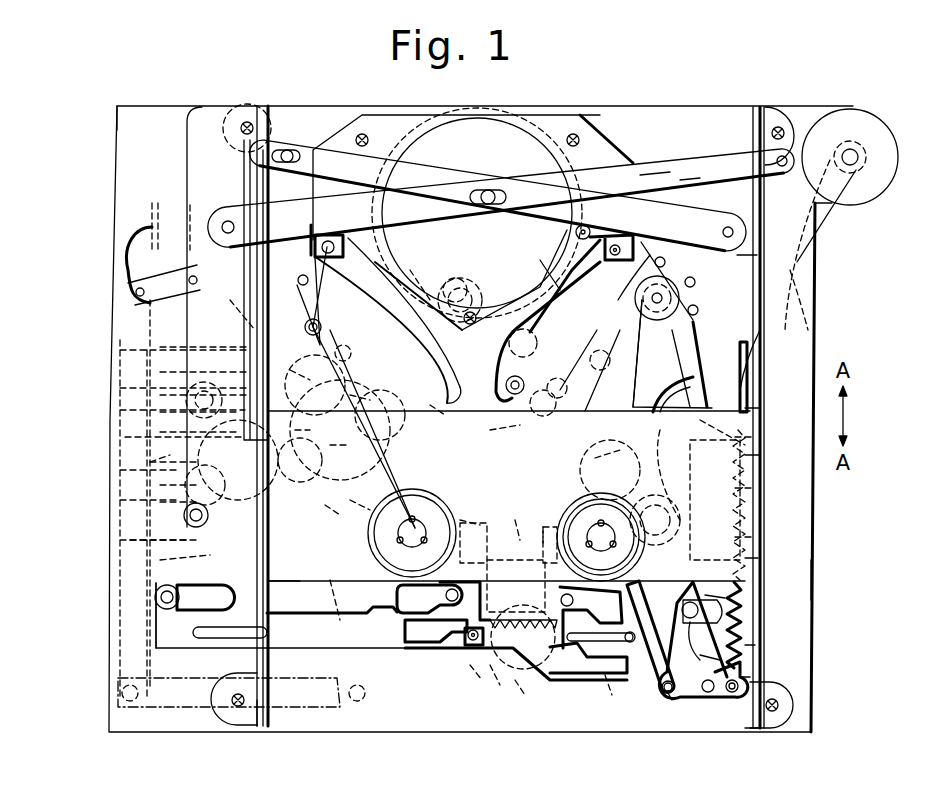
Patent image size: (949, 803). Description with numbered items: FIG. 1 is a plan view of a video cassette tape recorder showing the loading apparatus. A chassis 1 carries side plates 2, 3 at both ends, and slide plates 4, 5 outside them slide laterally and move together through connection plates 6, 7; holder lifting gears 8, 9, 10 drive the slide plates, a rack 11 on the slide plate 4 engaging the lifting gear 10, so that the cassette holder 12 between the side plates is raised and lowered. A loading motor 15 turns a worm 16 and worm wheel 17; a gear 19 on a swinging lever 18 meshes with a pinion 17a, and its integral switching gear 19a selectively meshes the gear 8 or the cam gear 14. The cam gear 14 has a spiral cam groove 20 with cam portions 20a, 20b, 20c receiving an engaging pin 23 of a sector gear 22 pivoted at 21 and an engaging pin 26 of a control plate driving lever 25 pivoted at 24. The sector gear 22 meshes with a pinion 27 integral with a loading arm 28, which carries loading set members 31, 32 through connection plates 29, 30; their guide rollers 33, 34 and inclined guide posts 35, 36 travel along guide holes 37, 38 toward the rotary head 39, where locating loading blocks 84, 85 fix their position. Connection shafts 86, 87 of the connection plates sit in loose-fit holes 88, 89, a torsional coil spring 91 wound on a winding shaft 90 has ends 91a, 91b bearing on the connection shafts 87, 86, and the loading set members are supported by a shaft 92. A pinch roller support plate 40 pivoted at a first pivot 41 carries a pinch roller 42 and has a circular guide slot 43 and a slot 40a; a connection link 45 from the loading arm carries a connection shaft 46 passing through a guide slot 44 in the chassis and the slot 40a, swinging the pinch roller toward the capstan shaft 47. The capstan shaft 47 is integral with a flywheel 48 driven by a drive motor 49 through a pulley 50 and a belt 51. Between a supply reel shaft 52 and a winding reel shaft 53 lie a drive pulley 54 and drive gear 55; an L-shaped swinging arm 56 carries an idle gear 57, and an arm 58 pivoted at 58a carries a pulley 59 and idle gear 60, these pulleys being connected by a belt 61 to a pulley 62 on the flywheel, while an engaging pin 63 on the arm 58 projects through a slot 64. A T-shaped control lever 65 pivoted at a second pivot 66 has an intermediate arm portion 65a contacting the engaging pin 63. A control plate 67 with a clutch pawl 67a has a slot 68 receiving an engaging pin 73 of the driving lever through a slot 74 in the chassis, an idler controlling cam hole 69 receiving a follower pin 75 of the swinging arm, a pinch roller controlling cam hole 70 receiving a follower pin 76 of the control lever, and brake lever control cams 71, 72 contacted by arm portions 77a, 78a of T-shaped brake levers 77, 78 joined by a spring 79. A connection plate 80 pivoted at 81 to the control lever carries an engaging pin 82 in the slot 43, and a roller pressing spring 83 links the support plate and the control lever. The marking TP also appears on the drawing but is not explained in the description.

The chassis 1 is at (122, 135).
The side plate 2 is at (257, 727).
The side plate 3 is at (745, 733).
The slide plate 4 is at (160, 572).
The slide plate 5 is at (800, 578).
The connection plate 6 is at (652, 172).
The connection plate 7 is at (693, 178).
The holder lifting gear 8 is at (130, 540).
The holder lifting gear 9 is at (183, 515).
The holder lifting gear 10 is at (180, 466).
The rack 11 is at (185, 344).
The cassette holder 12 is at (300, 588).
The cam gear 14 is at (255, 330).
The loading motor 15 is at (160, 347).
The worm 16 is at (160, 372).
The worm wheel 17 is at (160, 395).
The pinion 17a is at (160, 412).
The swinging lever 18 is at (160, 485).
The gear 19 is at (160, 502).
The switching gear 19a is at (160, 432).
The spiral cam groove 20 is at (322, 328).
The internal small-diameter concentric circular cam portion 20a is at (360, 396).
The external large-diameter concentric circular cam portion 20b is at (345, 441).
The cam portion 20c is at (302, 424).
The pivot 21 is at (360, 505).
The sector gear 22 is at (472, 518).
The engaging pin 23 is at (333, 505).
The pivot 24 is at (150, 462).
The control plate driving lever 25 is at (160, 560).
The engaging pin 26 is at (300, 375).
The pinion 27 is at (505, 430).
The loading arm 28 is at (475, 300).
The connection plate 29 is at (422, 290).
The connection plate 30 is at (545, 265).
The loading set member 31 is at (303, 231).
The loading set member 32 is at (642, 222).
The guide roller 33 is at (466, 197).
The guide roller 34 is at (508, 197).
The inclined guide post 35 is at (383, 235).
The inclined guide post 36 is at (576, 233).
The guide hole 37 is at (312, 295).
The guide hole 38 is at (535, 300).
The rotary head 39 is at (482, 150).
The pinch roller support plate 40 is at (760, 334).
The slot 40a is at (755, 460).
The first pivot 41 is at (760, 408).
The pinch roller 42 is at (640, 303).
The circular guide slot 43 is at (655, 380).
The circular guide slot 44 is at (640, 472).
The connection link 45 is at (650, 402).
The connection shaft 46 is at (605, 460).
The capstan shaft 47 is at (697, 283).
The flywheel 48 is at (806, 286).
The drive motor 49 is at (895, 186).
The pulley 50 is at (862, 155).
The belt 51 is at (838, 228).
The supply reel shaft 52 is at (420, 522).
The winding reel shaft 53 is at (588, 524).
The drive pulley 54 is at (525, 692).
The drive gear 55 is at (498, 686).
The L-shaped swinging arm 56 is at (547, 530).
The idle gear 57 is at (515, 520).
The arm 58 is at (755, 538).
The pivot 58a is at (755, 560).
The pulley 59 is at (752, 516).
The idle gear 60 is at (752, 488).
The belt 61 is at (750, 358).
The pulley 62 is at (700, 311).
The engaging pin 63 is at (745, 622).
The slot 64 is at (720, 612).
The control lever 65 is at (698, 700).
The intermediate arm portion 65a is at (745, 677).
The second pivot 66 is at (708, 693).
The control plate 67 is at (305, 648).
The clutch pawl 67a is at (722, 598).
The slot 68 is at (165, 609).
The idler controlling cam hole 69 is at (446, 646).
The pinch roller controlling cam hole 70 is at (561, 680).
The brake lever control cam 71 is at (378, 608).
The brake lever control cam 72 is at (658, 690).
The engaging pin 73 is at (158, 598).
The slot 74 is at (190, 636).
The follower pin 75 is at (478, 634).
The follower pin 76 is at (612, 692).
The brake lever 77 is at (385, 566).
The arm portion 77a is at (423, 597).
The brake lever 78 is at (601, 535).
The arm portion 78a is at (600, 660).
The spring 79 is at (482, 680).
The connection plate 80 is at (745, 655).
The pivot 81 is at (670, 696).
The engaging pin 82 is at (755, 437).
The roller pressing spring 83 is at (745, 645).
The locating loading block 84 is at (310, 168).
The locating loading block 85 is at (605, 157).
The connection shaft 86 is at (477, 322).
The connection shaft 87 is at (560, 396).
The loose-fit hole 88 is at (452, 280).
The loose-fit hole 89 is at (605, 358).
The winding shaft 90 is at (524, 382).
The torsional coil spring 91 is at (462, 393).
The spring end 91a is at (440, 410).
The spring end 91b is at (612, 352).
The shaft 92 is at (320, 247).
The tape path TP is at (655, 278).